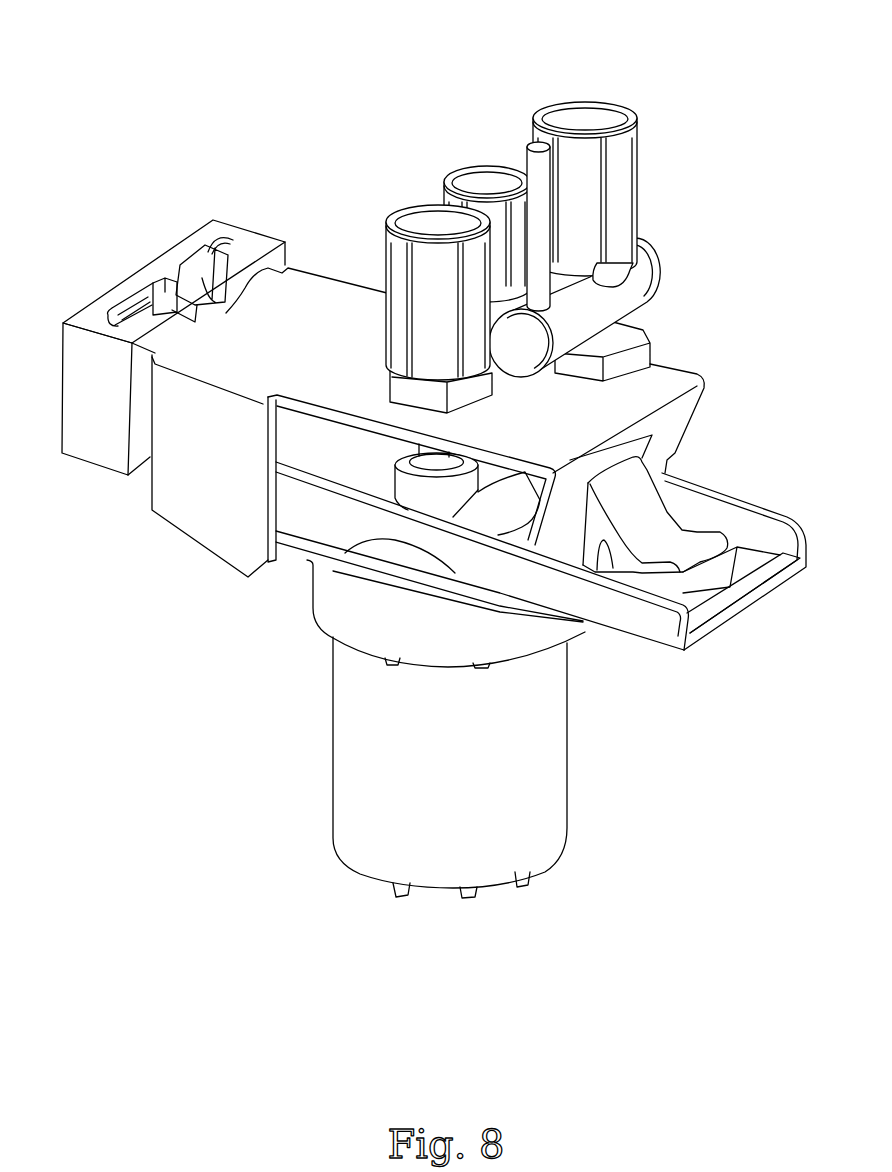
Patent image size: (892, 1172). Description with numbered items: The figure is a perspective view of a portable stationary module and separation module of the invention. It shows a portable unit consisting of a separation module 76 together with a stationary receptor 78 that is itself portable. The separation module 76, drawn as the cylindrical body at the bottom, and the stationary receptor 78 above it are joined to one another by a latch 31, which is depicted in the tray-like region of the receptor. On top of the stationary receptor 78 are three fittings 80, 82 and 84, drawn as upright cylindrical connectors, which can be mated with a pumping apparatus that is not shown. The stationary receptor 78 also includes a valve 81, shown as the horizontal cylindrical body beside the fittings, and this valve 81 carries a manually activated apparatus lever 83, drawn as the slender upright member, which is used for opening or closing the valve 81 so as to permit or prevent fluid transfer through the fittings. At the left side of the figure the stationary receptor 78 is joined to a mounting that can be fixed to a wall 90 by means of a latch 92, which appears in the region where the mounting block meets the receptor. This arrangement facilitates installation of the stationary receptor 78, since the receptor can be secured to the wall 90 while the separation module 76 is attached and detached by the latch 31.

The latch 31 is at (688, 543).
The separation module 76 is at (545, 788).
The stationary receptor 78 is at (677, 380).
The fitting 80 is at (430, 215).
The valve 81 is at (645, 283).
The fitting 82 is at (487, 180).
The manually activated apparatus lever 83 is at (528, 143).
The fitting 84 is at (587, 115).
The wall 90 is at (187, 208).
The latch 92 is at (220, 312).